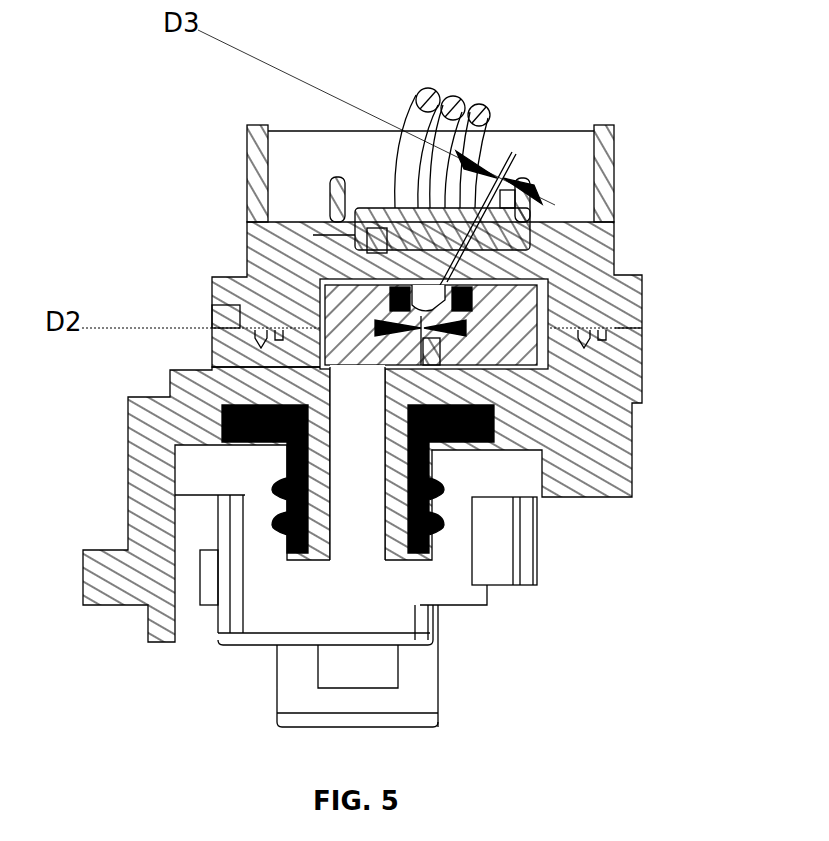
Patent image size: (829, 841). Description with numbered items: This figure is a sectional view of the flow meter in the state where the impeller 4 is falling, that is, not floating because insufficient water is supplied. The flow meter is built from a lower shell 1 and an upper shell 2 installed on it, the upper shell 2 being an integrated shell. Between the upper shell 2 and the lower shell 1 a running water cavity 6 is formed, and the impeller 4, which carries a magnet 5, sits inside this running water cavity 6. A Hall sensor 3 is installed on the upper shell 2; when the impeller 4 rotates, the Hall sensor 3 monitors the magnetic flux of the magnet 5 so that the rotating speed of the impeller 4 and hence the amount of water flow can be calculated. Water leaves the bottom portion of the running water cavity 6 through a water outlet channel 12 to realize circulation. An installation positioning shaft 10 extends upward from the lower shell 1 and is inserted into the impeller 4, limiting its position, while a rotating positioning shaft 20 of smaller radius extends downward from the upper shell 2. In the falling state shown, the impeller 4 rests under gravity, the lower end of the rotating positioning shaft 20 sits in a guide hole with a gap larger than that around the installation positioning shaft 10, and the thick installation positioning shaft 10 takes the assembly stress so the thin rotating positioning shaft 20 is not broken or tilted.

The lower shell 1 is at (150, 459).
The upper shell 2 is at (596, 228).
The Hall sensor 3 is at (407, 216).
The impeller 4 is at (493, 347).
The magnet 5 is at (474, 288).
The running water cavity 6 is at (550, 298).
The installation positioning shaft 10 is at (430, 357).
The water outlet channel 12 is at (347, 508).
The rotating positioning shaft 20 is at (432, 283).